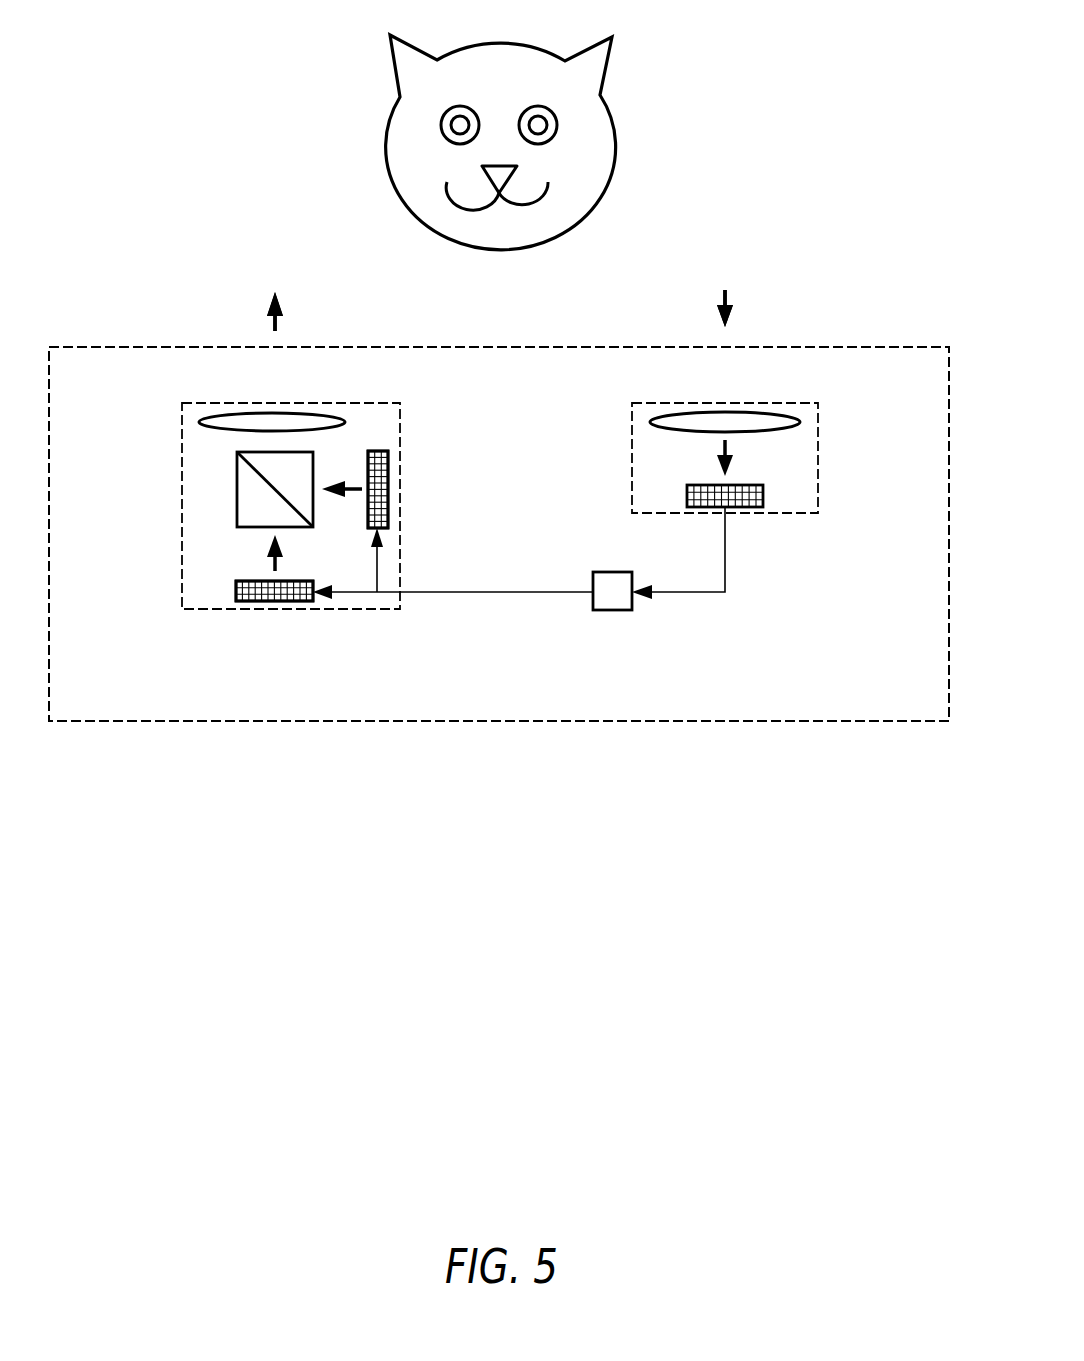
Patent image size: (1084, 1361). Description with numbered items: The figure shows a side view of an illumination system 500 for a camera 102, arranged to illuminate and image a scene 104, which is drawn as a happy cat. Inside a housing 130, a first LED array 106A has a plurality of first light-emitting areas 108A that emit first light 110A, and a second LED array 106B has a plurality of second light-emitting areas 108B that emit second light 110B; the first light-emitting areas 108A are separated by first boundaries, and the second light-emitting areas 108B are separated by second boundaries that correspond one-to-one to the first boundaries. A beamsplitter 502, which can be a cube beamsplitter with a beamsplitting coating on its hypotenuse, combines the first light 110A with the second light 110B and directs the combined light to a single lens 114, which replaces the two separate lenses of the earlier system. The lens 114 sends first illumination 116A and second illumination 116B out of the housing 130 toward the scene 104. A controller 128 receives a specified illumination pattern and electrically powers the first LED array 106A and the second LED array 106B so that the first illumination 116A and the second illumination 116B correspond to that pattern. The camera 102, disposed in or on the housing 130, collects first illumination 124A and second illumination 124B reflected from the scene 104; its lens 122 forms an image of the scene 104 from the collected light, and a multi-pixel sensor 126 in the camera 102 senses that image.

The illumination system 500 is at (205, 203).
The scene 104 is at (386, 139).
The housing 130 is at (67, 346).
The first illumination 116A is at (270, 306).
The second illumination 116B is at (200, 311).
The first illumination reflected from the scene 124A is at (735, 311).
The second illumination reflected from the scene 124B is at (807, 308).
The lens 114 is at (228, 412).
The beamsplitter 502 is at (237, 488).
The first LED array 106A is at (245, 602).
The first light-emitting areas 108A is at (300, 602).
The second LED array 106B is at (385, 512).
The second light-emitting areas 108B is at (372, 462).
The first light 110A is at (268, 547).
The second light 110B is at (331, 497).
The camera 102 is at (818, 457).
The lens 122 is at (682, 410).
The multi-pixel sensor 126 is at (750, 508).
The controller 128 is at (612, 610).